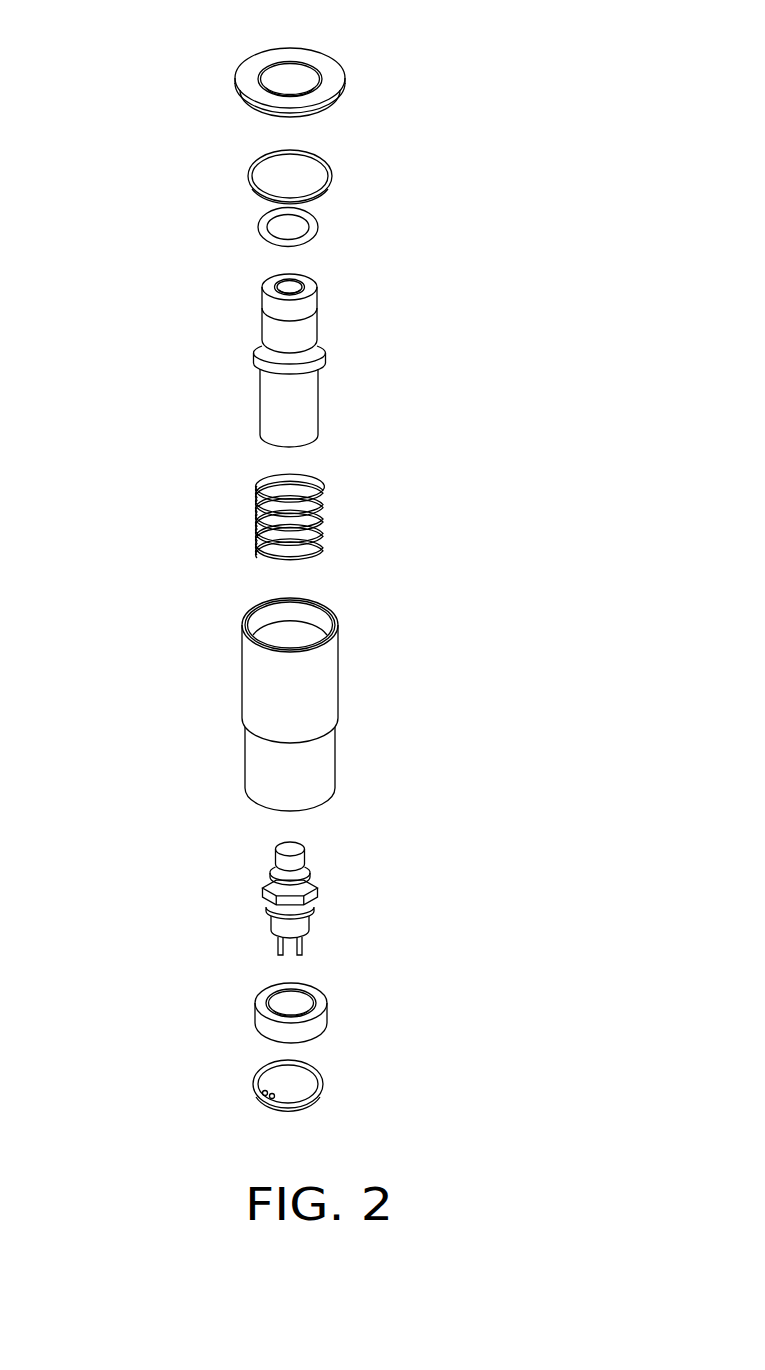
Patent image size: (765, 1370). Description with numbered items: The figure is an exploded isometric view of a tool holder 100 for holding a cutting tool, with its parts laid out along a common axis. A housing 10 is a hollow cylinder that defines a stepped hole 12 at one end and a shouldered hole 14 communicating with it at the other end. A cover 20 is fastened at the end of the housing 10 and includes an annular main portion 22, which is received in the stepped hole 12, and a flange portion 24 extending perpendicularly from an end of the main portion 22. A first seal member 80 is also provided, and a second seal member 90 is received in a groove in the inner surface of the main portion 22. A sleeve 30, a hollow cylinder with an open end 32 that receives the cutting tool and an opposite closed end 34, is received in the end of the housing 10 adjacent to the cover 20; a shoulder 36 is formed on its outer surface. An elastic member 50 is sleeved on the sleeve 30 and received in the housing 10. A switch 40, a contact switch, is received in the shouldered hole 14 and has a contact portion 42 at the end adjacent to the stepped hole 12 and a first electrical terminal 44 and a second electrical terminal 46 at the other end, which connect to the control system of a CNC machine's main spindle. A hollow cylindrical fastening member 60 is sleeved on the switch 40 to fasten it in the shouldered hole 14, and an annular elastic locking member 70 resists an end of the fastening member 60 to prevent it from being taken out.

The tool holder 100 is at (213, 36).
The cover 20 is at (417, 46).
The flange portion 24 is at (328, 77).
The main portion 22 is at (312, 120).
The first seal member 80 is at (331, 174).
The second seal member 90 is at (318, 225).
The sleeve 30 is at (296, 357).
The open end 32 is at (312, 287).
The shoulder 36 is at (322, 351).
The closed end 34 is at (270, 437).
The elastic member 50 is at (325, 513).
The housing 10 is at (327, 702).
The stepped hole 12 is at (307, 633).
The shouldered hole 14 is at (322, 802).
The switch 40 is at (277, 893).
The contact portion 42 is at (287, 848).
The first electrical terminal 44 is at (280, 948).
The second electrical terminal 46 is at (303, 948).
The fastening member 60 is at (315, 1023).
The locking member 70 is at (322, 1078).